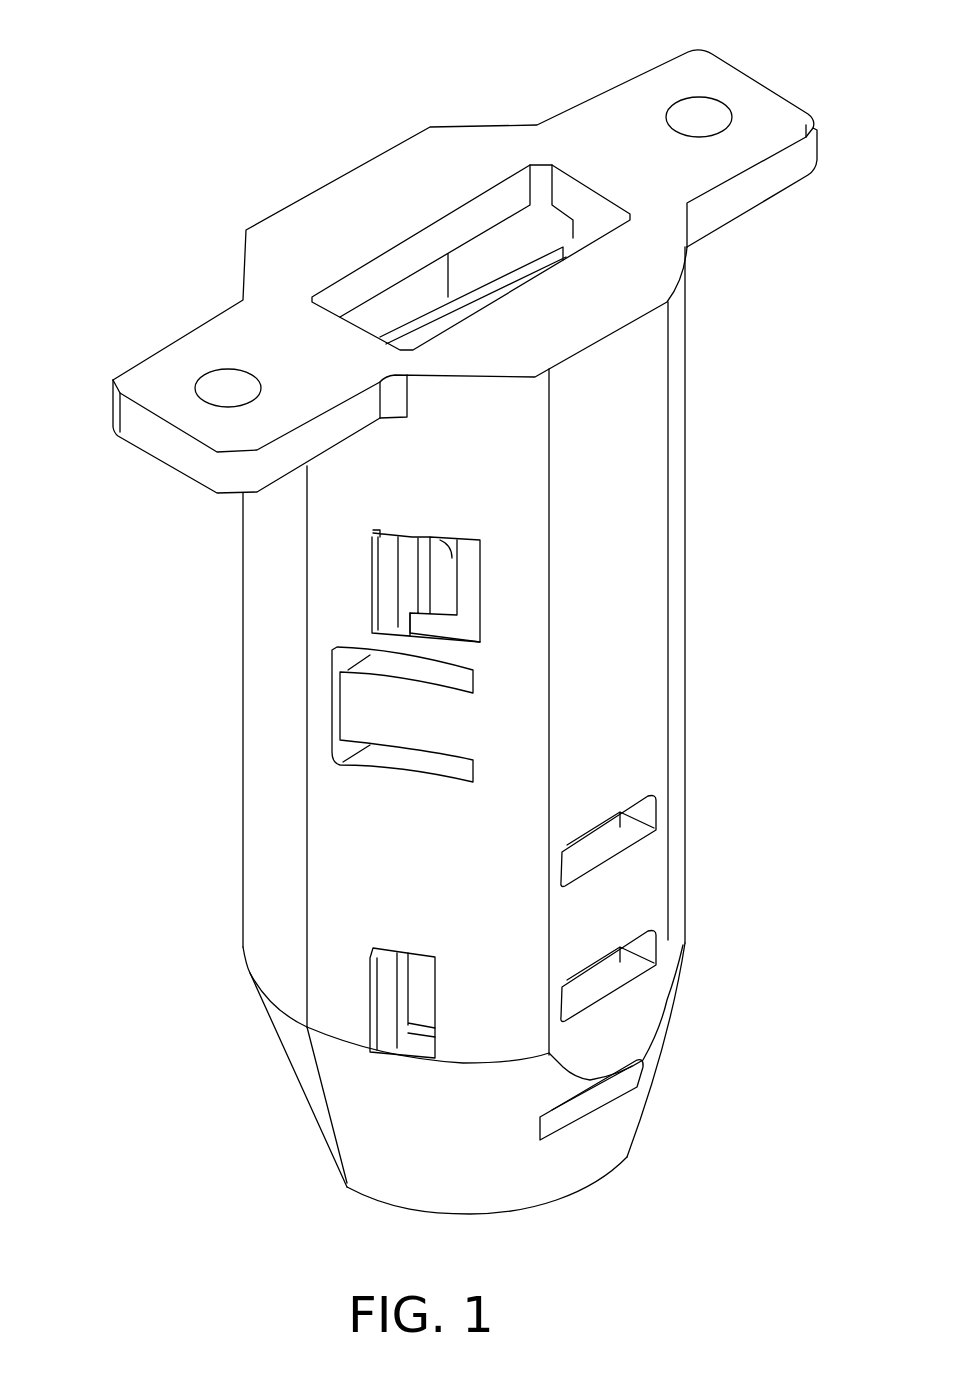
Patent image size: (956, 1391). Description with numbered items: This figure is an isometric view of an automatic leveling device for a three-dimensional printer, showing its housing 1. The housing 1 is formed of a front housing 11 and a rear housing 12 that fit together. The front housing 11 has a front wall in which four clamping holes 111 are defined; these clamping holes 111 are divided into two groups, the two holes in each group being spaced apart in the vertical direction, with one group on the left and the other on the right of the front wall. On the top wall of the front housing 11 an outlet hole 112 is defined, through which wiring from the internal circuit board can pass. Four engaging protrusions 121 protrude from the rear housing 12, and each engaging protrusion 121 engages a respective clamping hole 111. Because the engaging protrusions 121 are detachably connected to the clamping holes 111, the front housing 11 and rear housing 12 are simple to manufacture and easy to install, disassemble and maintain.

The housing 1 is at (98, 552).
The front housing 11 is at (343, 888).
The clamping hole 111 is at (465, 590).
The outlet hole 112 is at (498, 207).
The rear housing 12 is at (268, 668).
The engaging protrusion 121 is at (390, 578).